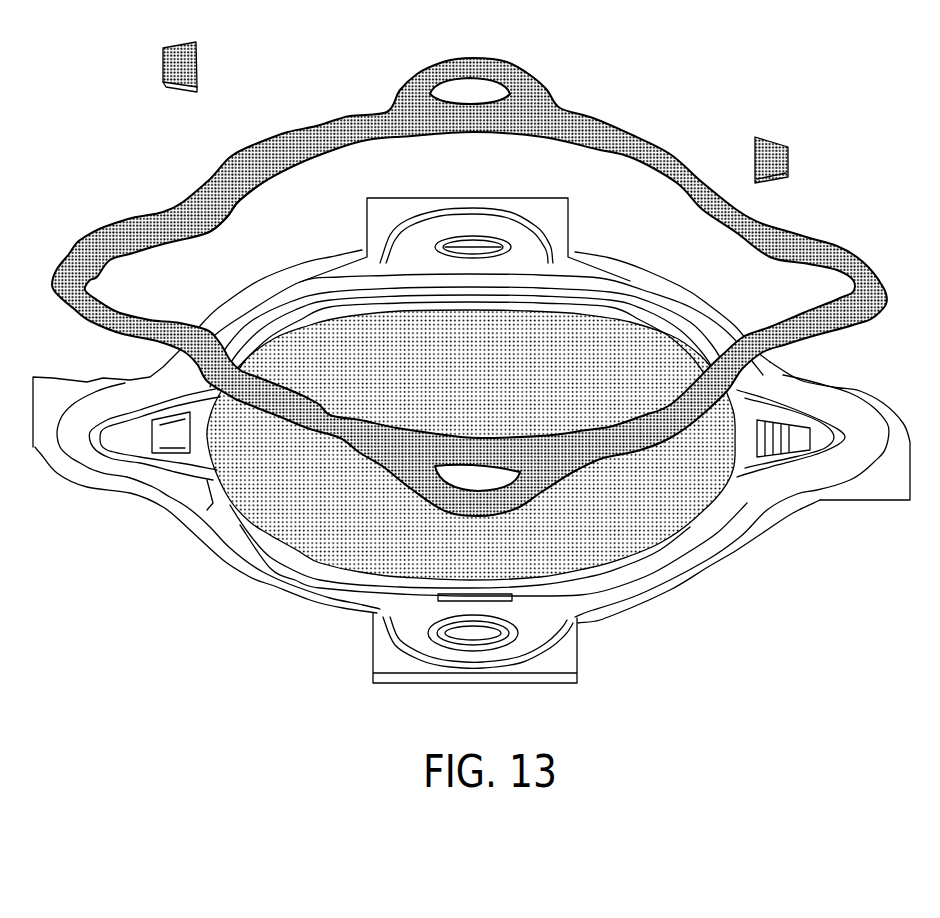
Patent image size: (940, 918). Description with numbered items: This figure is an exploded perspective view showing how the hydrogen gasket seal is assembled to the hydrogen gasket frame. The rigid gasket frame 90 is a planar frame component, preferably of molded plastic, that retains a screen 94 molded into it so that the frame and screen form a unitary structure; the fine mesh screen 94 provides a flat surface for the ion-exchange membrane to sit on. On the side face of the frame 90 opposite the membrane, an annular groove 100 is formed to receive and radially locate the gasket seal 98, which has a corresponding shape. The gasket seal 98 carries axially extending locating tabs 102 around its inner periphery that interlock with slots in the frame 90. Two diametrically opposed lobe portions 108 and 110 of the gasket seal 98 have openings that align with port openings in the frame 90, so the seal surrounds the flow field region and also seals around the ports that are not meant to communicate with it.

The rigid gasket frame 90 is at (258, 587).
The screen 94 is at (660, 517).
The gasket seal 98 is at (622, 138).
The annular groove 100 is at (347, 590).
The locating tab 102 is at (237, 205).
The lobe portion 108 is at (540, 493).
The lobe portion 110 is at (410, 77).